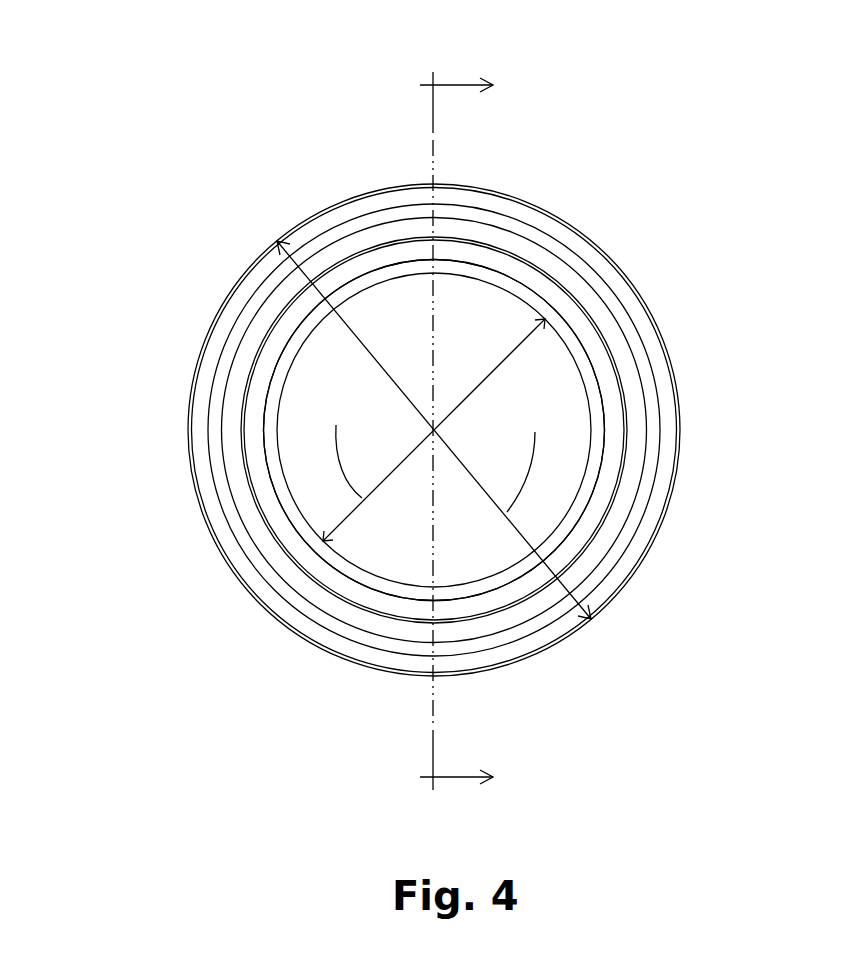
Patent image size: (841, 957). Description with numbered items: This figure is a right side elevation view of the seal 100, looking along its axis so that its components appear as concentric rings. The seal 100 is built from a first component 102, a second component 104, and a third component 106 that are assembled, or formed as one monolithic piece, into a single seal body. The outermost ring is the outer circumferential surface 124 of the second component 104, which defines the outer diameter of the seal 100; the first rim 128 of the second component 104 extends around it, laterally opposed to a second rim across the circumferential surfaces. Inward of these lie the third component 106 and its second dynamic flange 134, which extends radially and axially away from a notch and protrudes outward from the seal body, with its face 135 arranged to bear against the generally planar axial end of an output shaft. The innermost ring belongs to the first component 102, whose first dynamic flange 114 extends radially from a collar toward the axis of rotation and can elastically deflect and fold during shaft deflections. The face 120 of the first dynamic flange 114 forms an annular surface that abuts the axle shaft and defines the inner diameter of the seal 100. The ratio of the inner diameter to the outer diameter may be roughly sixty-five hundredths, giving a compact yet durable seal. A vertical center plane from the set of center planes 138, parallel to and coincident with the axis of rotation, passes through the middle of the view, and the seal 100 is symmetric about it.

The seal 100 is at (186, 118).
The first component 102 is at (615, 419).
The second component 104 is at (532, 215).
The third component 106 is at (237, 380).
The first dynamic flange 114 is at (597, 462).
The face 120 is at (399, 583).
The outer circumferential surface 124 is at (668, 348).
The first rim 128 is at (610, 258).
The second dynamic flange 134 is at (238, 492).
The face 135 is at (242, 437).
The set of center planes 138 is at (432, 165).